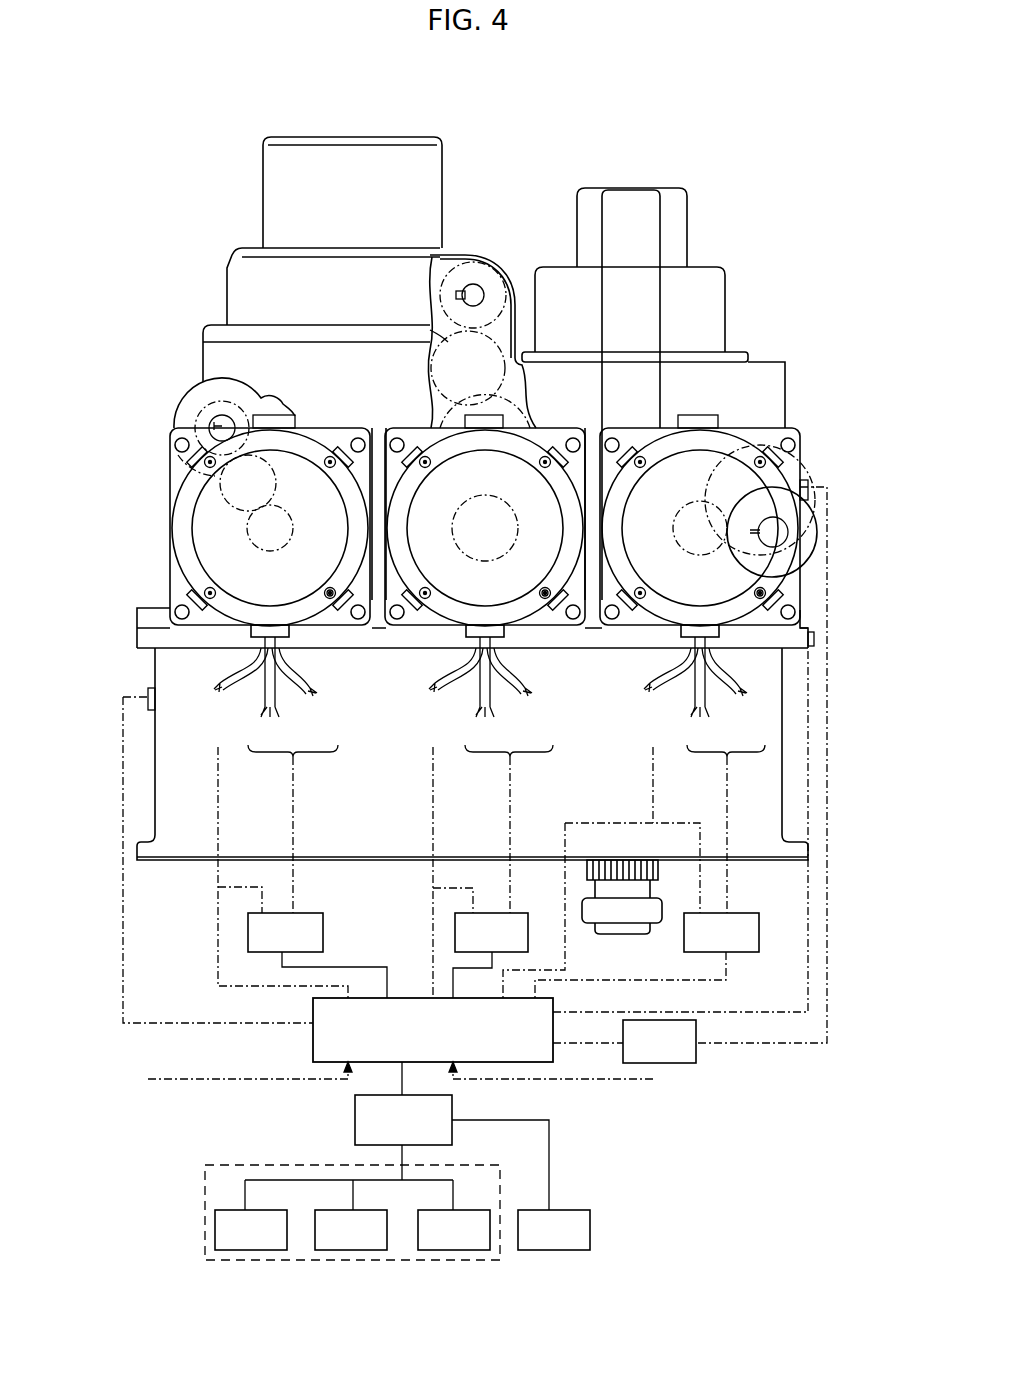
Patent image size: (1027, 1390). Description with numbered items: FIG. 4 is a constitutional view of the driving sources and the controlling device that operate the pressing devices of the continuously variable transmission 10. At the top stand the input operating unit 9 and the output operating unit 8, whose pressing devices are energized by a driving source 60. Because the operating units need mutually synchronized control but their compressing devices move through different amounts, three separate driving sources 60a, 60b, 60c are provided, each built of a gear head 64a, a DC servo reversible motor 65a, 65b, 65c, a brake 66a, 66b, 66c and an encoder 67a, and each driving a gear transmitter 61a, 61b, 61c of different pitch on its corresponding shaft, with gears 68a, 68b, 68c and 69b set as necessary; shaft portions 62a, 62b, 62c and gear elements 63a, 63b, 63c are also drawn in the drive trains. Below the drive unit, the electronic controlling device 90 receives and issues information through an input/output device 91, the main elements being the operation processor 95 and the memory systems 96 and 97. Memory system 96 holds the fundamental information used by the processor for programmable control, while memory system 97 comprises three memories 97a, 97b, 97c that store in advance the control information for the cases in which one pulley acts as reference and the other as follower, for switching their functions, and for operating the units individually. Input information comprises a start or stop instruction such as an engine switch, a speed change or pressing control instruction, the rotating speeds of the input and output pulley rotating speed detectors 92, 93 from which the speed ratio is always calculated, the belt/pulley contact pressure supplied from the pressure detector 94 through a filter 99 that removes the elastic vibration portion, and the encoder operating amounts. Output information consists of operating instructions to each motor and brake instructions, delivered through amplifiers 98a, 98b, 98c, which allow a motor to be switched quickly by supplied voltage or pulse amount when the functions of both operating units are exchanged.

The output operating unit 8 is at (593, 198).
The input operating unit 9 is at (378, 160).
The continuously variable transmission 10 is at (222, 236).
The driving source 60 is at (524, 296).
The driving source 60a is at (146, 456).
The driving source 60b is at (396, 412).
The driving source 60c is at (806, 420).
The gear transmitter 61a is at (200, 483).
The gear transmitter 61b is at (418, 374).
The gear transmitter 61c is at (725, 498).
The first motor shaft 62a is at (246, 546).
The second motor shaft 62b is at (496, 562).
The third motor shaft 62c is at (713, 502).
The first output gear 63a is at (197, 405).
The second output gear 63b is at (441, 262).
The third output gear 63c is at (800, 560).
The gear head 64a is at (196, 641).
The DC servo reversible motor 65a is at (190, 597).
The DC servo reversible motor 65b is at (412, 615).
The DC servo reversible motor 65c is at (626, 614).
The brake 66a is at (317, 608).
The brake 66b is at (536, 614).
The brake 66c is at (725, 609).
The encoder 67a is at (323, 600).
The gear 68a is at (282, 428).
The gear 68b is at (516, 416).
The gear 68c is at (698, 421).
The gear 69b is at (448, 340).
The electronic controlling device 90 is at (402, 917).
The I/O interface 91 is at (320, 1038).
The input pulley rotating speed detector 92 is at (147, 692).
The output pulley rotating speed detector 93 is at (811, 650).
The pressure detector 94 is at (808, 490).
The operation processor 95 is at (355, 1118).
The memory system 96 is at (554, 1230).
The memory system 97 is at (228, 1165).
The memory 97a is at (251, 1230).
The memory 97b is at (351, 1230).
The memory 97c is at (454, 1230).
The amplifier 98a is at (491, 932).
The amplifier 98b is at (285, 932).
The amplifier 98c is at (721, 932).
The filter 99 is at (624, 1041).